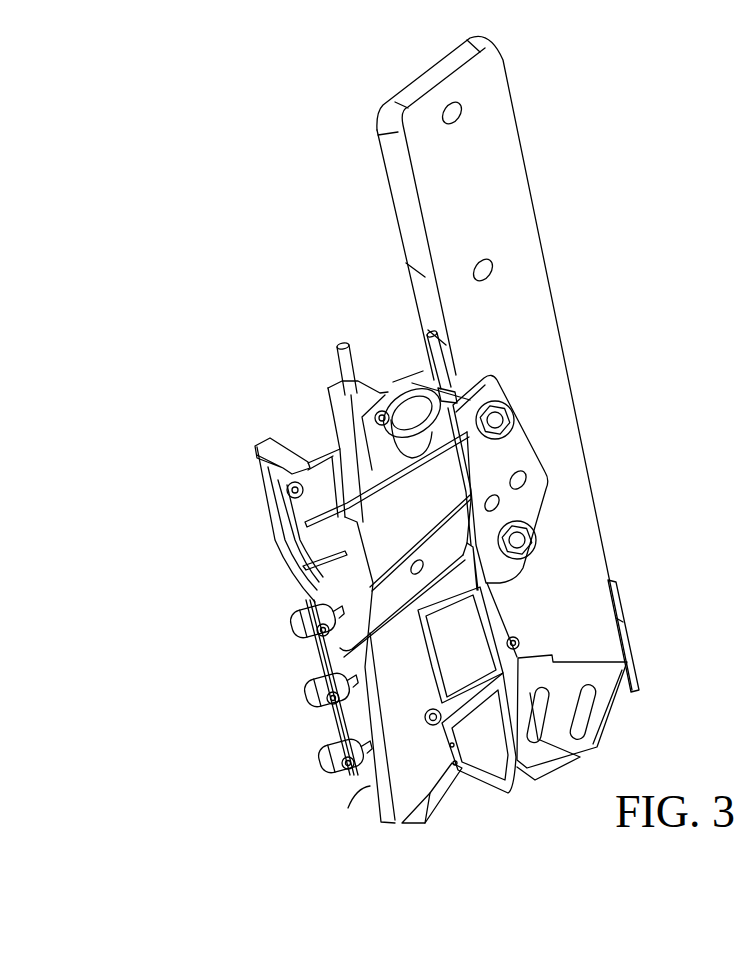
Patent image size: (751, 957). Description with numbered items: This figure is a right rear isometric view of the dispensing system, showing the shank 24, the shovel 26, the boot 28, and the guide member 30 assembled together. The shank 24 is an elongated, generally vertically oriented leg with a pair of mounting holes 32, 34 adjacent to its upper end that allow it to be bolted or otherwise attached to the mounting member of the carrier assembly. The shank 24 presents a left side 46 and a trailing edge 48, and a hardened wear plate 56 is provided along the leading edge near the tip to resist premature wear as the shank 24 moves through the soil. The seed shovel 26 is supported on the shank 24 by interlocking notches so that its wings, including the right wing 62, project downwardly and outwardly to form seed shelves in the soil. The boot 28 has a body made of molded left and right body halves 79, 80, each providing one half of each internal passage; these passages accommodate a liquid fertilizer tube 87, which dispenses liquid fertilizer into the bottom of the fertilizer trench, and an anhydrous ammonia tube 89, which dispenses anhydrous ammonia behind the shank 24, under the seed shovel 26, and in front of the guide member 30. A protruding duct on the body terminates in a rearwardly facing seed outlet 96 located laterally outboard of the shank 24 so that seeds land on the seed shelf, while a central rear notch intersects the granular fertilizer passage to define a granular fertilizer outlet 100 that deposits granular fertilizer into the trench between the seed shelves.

The shank 24 is at (620, 184).
The seed shovel 26 is at (632, 735).
The boot 28 is at (238, 684).
The guide member 30 is at (440, 800).
The mounting hole 32 is at (460, 117).
The mounting hole 34 is at (490, 272).
The left side 46 is at (575, 404).
The trailing edge 48 is at (398, 205).
The hardened wear plate 56 is at (632, 647).
The right wing 62 is at (588, 742).
The left body half 79 is at (280, 543).
The right body half 80 is at (342, 577).
The liquid fertilizer tube 87 is at (338, 368).
The anhydrous ammonia tube 89 is at (424, 358).
The seed outlet 96 is at (491, 795).
The granular fertilizer outlet 100 is at (348, 810).